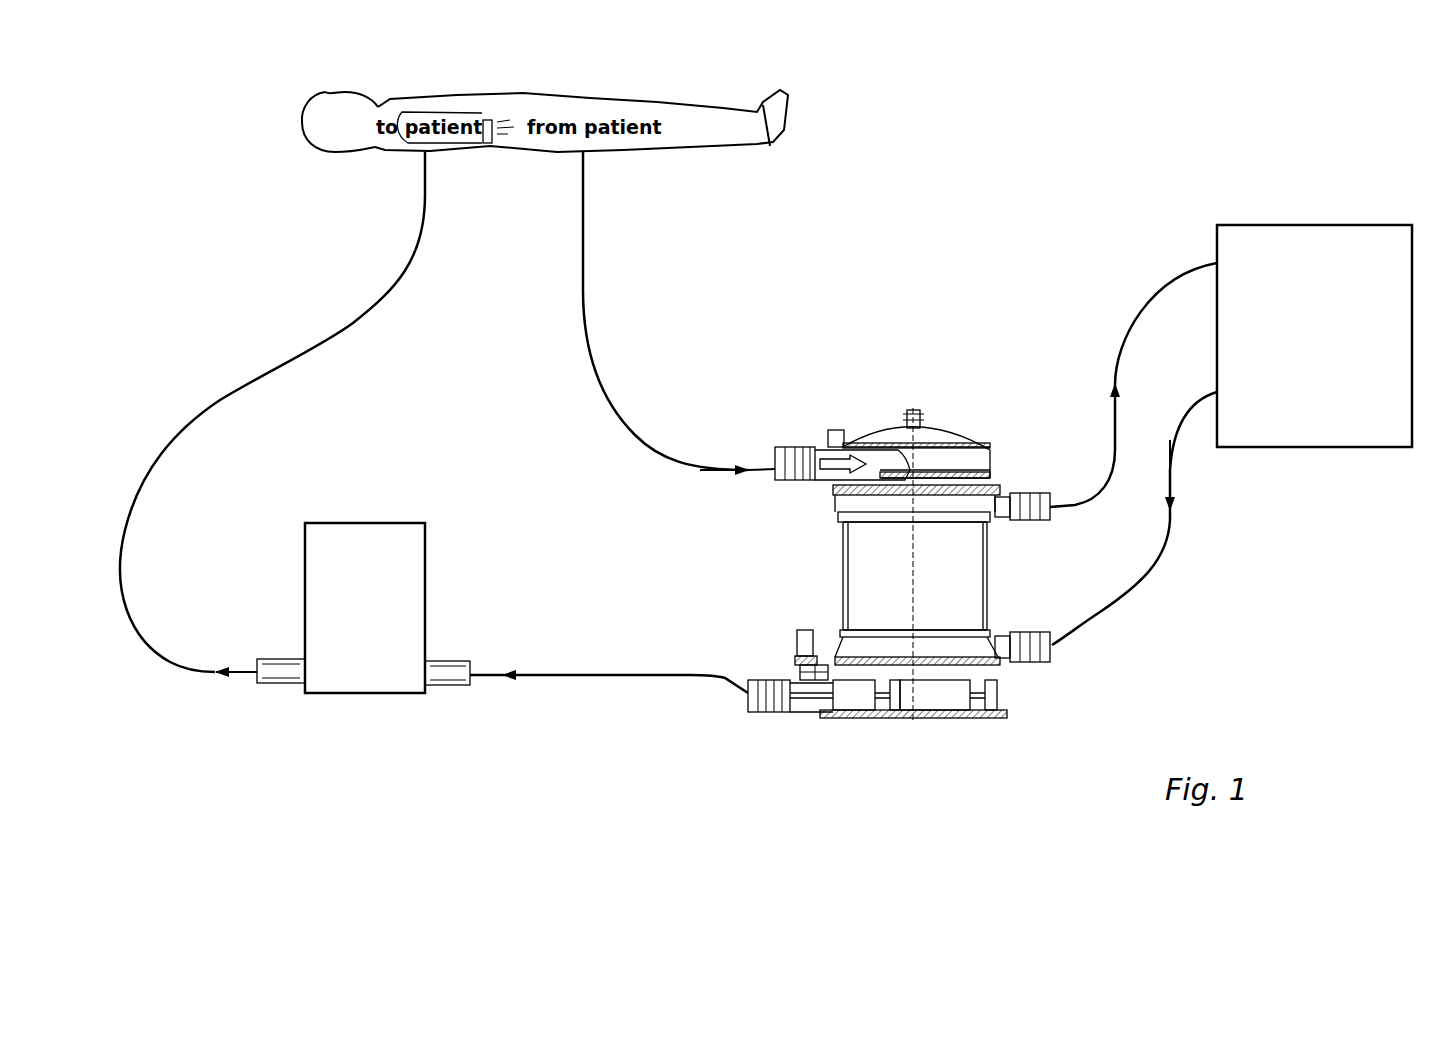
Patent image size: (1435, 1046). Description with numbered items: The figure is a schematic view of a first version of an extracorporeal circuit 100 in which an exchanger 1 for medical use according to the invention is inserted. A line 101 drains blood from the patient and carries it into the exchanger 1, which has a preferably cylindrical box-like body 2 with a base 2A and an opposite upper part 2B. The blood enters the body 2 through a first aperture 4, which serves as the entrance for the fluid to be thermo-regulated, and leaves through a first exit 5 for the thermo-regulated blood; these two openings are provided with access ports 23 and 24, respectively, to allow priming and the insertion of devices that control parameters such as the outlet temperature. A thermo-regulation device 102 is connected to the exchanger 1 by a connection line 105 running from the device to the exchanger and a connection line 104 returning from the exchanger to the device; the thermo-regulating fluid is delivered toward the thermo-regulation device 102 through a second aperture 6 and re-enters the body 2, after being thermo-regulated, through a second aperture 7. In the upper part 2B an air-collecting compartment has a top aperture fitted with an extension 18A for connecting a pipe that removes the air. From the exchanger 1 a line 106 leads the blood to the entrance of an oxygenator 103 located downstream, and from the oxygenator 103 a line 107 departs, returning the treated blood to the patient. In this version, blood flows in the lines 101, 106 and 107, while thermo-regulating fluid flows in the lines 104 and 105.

The extracorporeal circuit 100 is at (768, 284).
The line 101 is at (596, 368).
The thermo-regulation device 102 is at (1275, 242).
The oxygenator 103 is at (428, 557).
The connection line 104 is at (1152, 292).
The connection line 105 is at (1158, 565).
The line 106 is at (630, 678).
The line 107 is at (306, 350).
The exchanger for medical use 1 is at (944, 420).
The box-like body 2 is at (992, 590).
The base 2A is at (937, 725).
The upper part 2B is at (985, 438).
The first aperture 4 is at (793, 450).
The first exit 5 is at (783, 713).
The second aperture 6 is at (992, 481).
The second aperture 7 is at (1037, 655).
The extension 18A is at (912, 420).
The access port 23 is at (836, 432).
The access port 24 is at (798, 642).